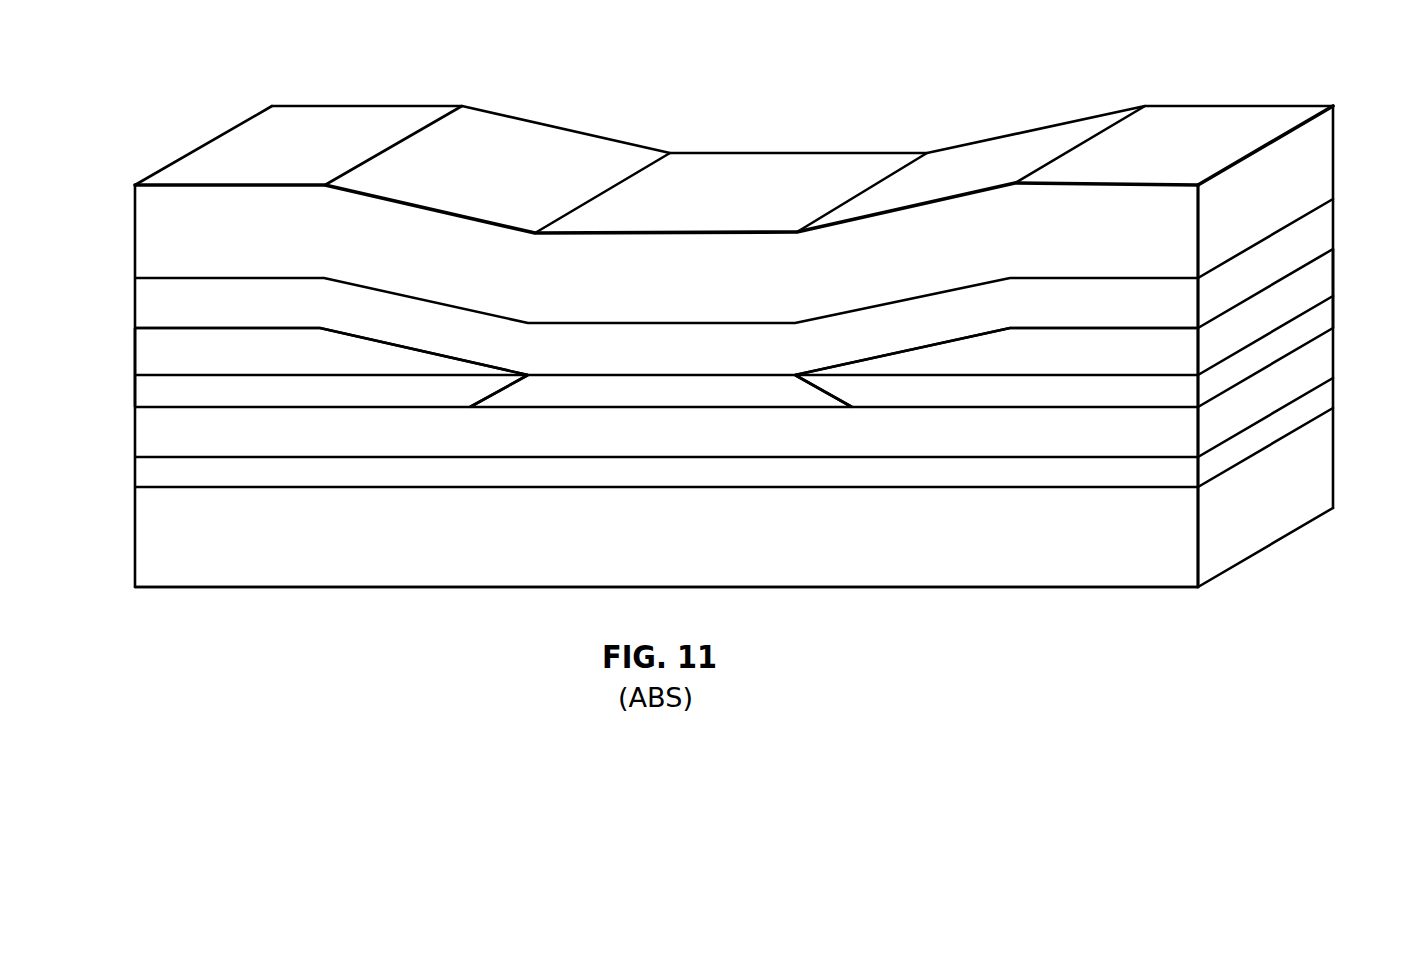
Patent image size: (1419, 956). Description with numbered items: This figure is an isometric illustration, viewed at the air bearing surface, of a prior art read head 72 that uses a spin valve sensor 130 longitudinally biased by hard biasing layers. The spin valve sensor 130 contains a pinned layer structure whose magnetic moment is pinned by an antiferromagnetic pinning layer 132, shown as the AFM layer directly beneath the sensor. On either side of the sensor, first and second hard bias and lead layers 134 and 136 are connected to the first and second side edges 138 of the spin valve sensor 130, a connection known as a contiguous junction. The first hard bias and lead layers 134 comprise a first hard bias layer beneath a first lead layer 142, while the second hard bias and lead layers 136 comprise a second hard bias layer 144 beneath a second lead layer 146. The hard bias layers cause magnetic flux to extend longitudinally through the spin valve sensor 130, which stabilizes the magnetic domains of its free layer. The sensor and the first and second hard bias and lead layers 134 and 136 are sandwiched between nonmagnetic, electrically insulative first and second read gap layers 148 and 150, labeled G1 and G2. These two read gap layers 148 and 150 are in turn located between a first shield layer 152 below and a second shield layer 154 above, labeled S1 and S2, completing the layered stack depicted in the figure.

The read head 72 is at (802, 118).
The spin valve sensor 130 is at (568, 373).
The antiferromagnetic pinning layer 132 is at (855, 440).
The first hard bias and lead layers 134 is at (126, 332).
The second hard bias and lead layers 136 is at (1342, 247).
The first side edge 138 is at (483, 398).
The first lead layer 142 is at (167, 350).
The second hard bias layer 144 is at (1133, 388).
The second lead layer 146 is at (1138, 353).
The first read gap layer 148 is at (368, 470).
The second read gap layer 150 is at (427, 317).
The first shield layer 152 is at (250, 562).
The second shield layer 154 is at (568, 150).